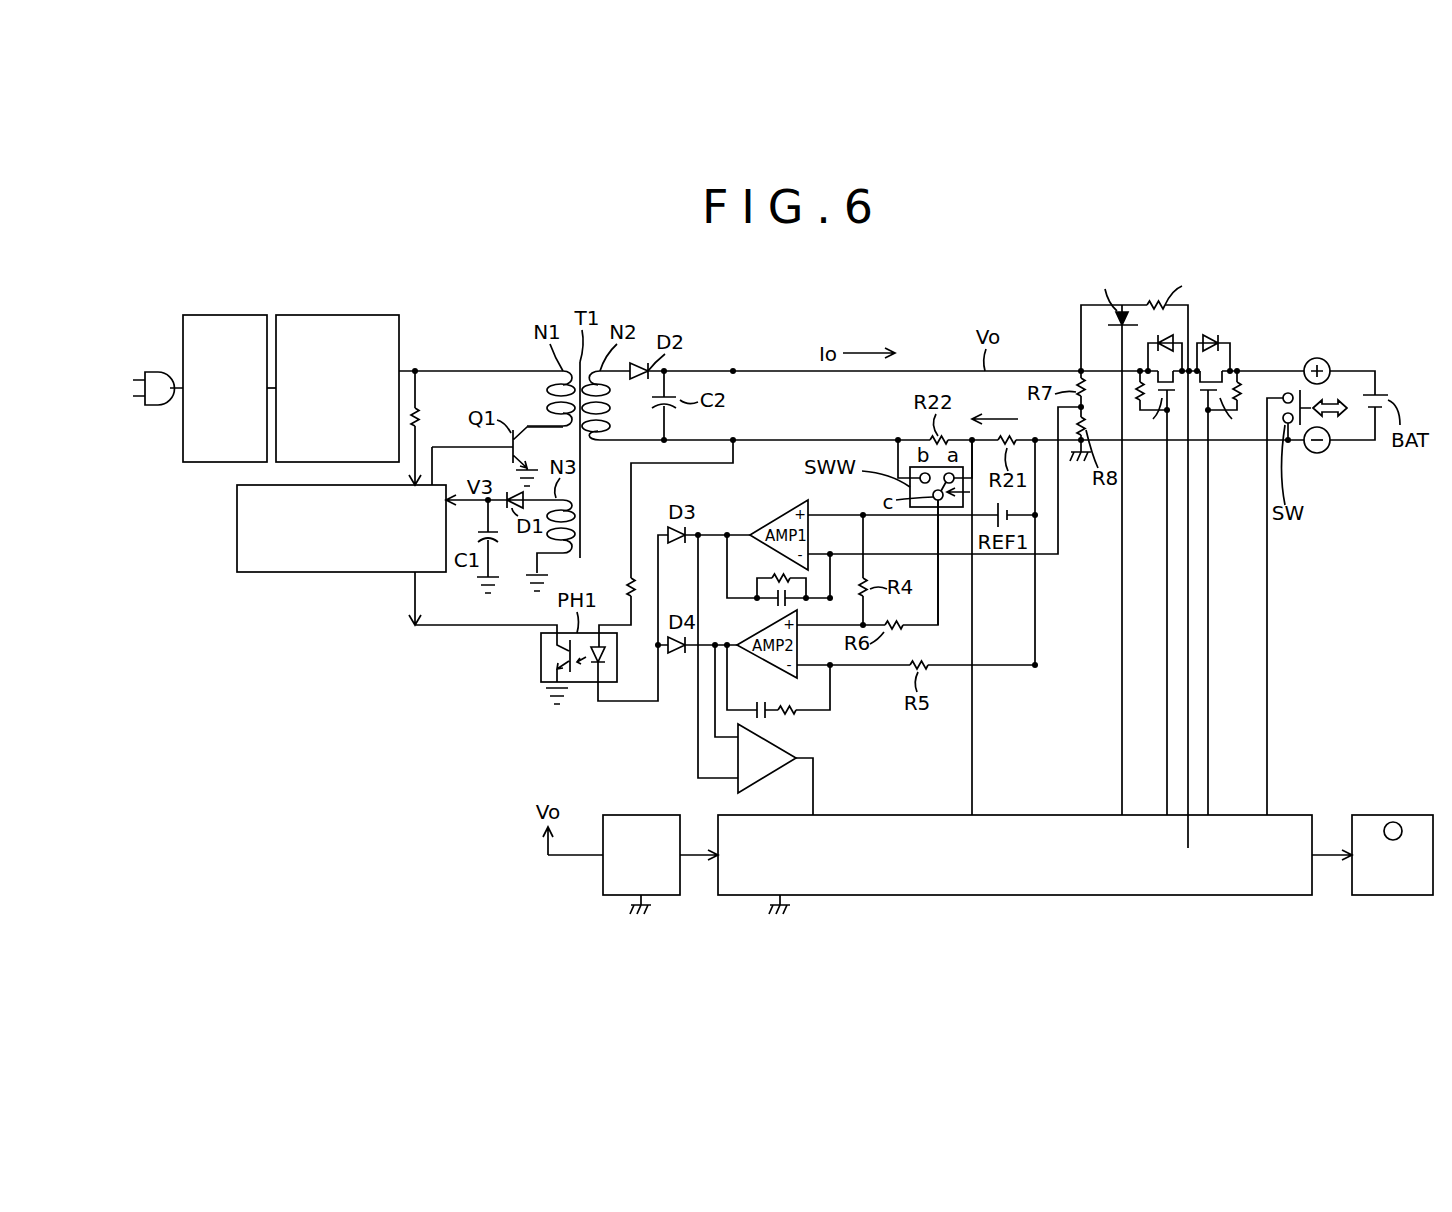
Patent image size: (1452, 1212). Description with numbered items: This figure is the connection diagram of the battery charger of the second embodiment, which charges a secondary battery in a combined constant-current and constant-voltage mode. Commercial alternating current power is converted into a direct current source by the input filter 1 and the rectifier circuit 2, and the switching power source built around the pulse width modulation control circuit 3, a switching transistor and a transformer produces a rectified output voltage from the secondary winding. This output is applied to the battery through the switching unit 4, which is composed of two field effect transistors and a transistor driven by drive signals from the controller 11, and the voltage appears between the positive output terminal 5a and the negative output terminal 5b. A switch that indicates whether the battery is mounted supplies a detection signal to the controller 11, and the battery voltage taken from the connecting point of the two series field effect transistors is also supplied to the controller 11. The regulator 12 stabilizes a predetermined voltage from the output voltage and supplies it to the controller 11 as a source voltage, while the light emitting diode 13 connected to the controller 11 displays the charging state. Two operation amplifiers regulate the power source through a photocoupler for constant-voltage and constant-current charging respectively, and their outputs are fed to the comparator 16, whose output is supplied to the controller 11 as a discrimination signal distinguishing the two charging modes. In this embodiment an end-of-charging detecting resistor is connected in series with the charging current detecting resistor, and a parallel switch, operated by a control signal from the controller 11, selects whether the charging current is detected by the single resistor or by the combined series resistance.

The input filter 1 is at (236, 315).
The rectifier circuit 2 is at (355, 315).
The pulse width modulation control circuit 3 is at (352, 575).
The switching unit 4 is at (1266, 277).
The output terminal (positive side) 5a is at (1317, 358).
The output terminal (negative side) 5b is at (1317, 453).
The controller 11 is at (863, 815).
The regulator 12 is at (643, 815).
The LED 13 is at (1405, 815).
The comparator 16 is at (770, 743).